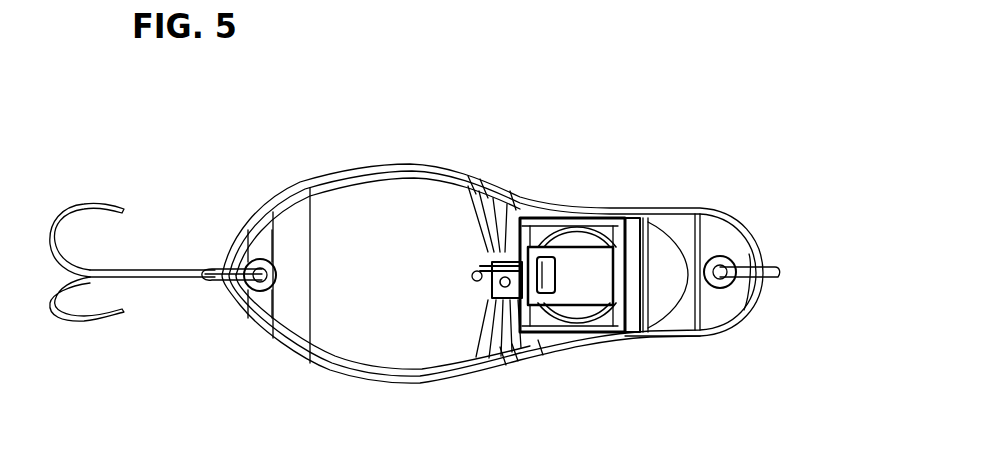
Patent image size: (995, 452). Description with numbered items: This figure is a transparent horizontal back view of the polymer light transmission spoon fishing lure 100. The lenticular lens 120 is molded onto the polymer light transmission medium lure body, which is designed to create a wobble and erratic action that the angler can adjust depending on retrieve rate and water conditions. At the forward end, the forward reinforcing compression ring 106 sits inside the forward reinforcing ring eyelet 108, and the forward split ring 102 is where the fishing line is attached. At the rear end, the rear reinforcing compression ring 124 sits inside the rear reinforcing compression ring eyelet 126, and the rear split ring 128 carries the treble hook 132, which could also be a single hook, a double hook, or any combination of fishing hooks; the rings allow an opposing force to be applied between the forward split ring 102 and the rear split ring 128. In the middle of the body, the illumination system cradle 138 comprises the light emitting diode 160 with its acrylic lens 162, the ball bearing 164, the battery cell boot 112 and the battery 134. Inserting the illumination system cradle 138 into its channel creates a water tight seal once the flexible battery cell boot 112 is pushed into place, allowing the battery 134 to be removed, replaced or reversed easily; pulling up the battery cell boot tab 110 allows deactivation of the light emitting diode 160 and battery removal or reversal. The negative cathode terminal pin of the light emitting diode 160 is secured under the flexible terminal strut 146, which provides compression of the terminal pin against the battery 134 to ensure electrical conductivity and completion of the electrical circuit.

The spoon fishing lure 100 is at (428, 117).
The forward split ring 102 is at (773, 271).
The forward reinforcing compression ring 106 is at (715, 253).
The forward reinforcing ring eyelet 108 is at (742, 310).
The battery cell boot tab 110 is at (662, 277).
The battery cell boot 112 is at (677, 337).
The lenticular lens 120 is at (385, 165).
The rear reinforcing compression ring 124 is at (257, 258).
The rear reinforcing compression ring eyelet 126 is at (258, 292).
The rear split ring 128 is at (250, 268).
The treble hook 132 is at (58, 322).
The battery 134 is at (572, 240).
The illumination system cradle 138 is at (587, 287).
The flexible terminal strut 146 is at (546, 333).
The light emitting diode 160 is at (482, 283).
The acrylic lens 162 is at (473, 277).
The ball bearing 164 is at (509, 288).